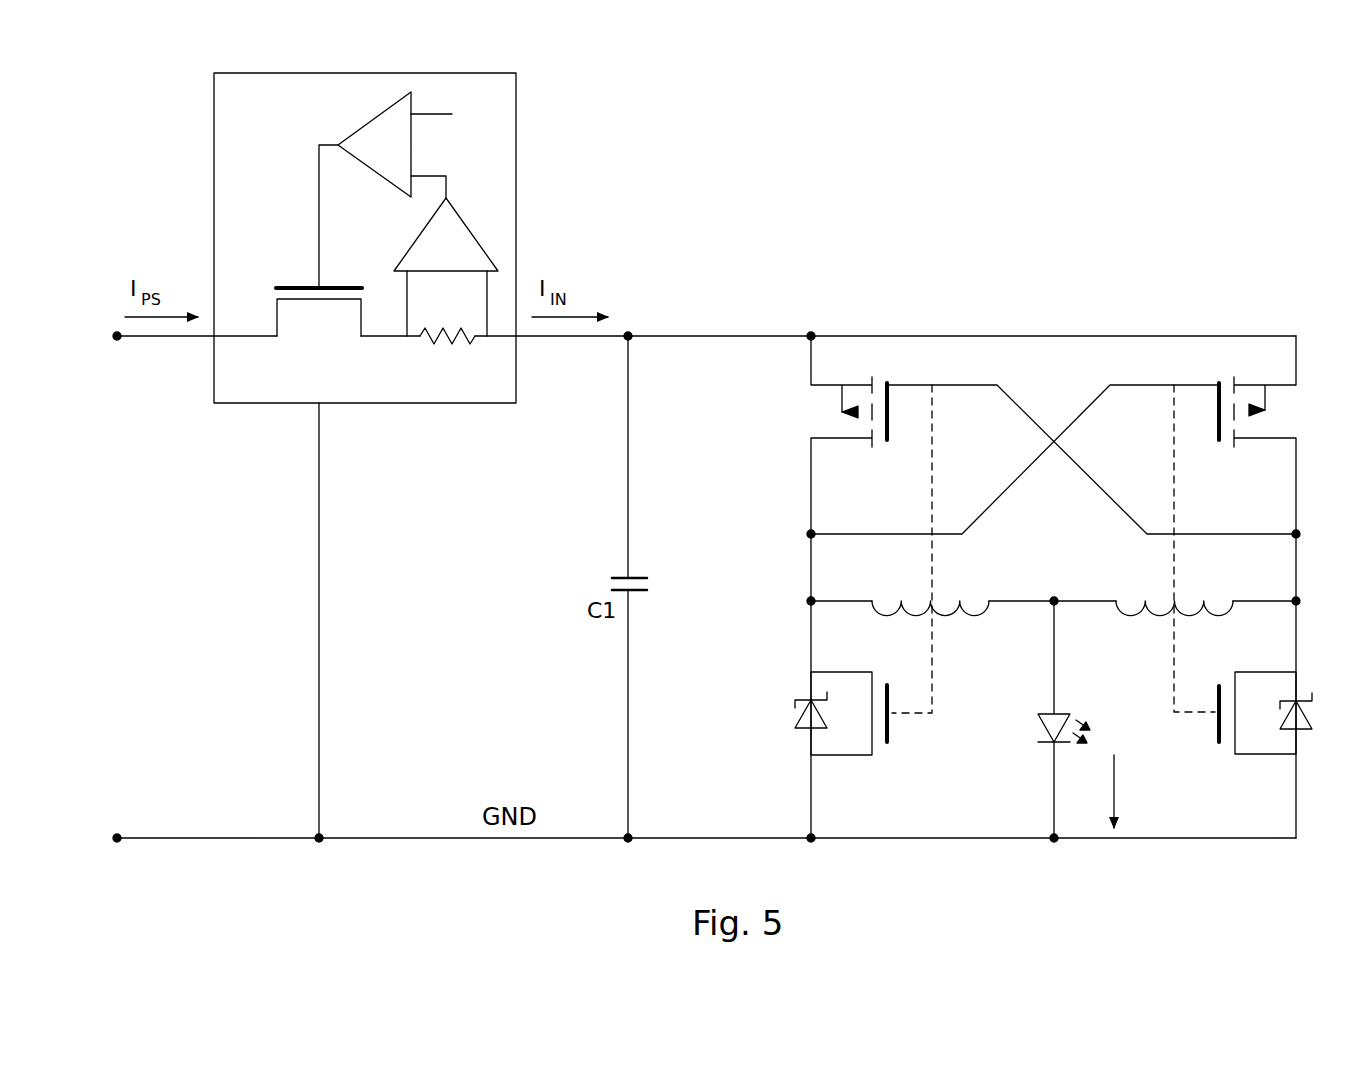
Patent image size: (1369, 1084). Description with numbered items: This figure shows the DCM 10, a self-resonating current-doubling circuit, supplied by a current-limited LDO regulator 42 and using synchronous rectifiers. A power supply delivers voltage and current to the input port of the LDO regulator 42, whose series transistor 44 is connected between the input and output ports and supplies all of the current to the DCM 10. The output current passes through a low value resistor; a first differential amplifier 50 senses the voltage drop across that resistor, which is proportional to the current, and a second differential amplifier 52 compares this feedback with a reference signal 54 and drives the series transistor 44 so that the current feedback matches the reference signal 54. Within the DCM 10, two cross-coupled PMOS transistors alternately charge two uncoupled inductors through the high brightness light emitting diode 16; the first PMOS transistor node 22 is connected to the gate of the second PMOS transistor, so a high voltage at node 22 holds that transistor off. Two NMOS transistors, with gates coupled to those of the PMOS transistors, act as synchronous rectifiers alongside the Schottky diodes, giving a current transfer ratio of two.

The DCM 10 is at (1186, 306).
The light emitting diode 16 is at (1058, 712).
The transistor Q1 node 22 is at (805, 601).
The LDO regulator 42 is at (214, 163).
The series transistor 44 is at (290, 286).
The first differential amplifier 50 is at (446, 234).
The second differential amplifier 52 is at (374, 144).
The reference signal 54 is at (455, 116).